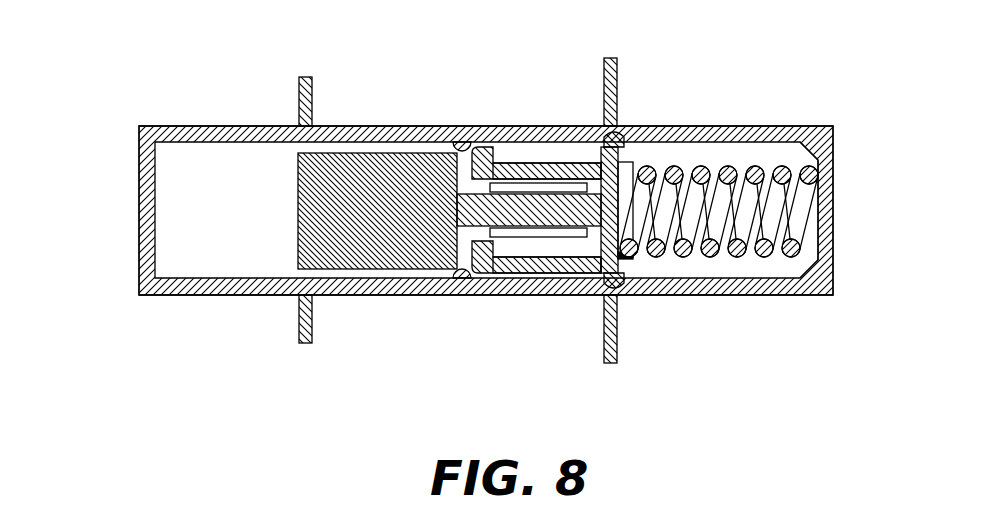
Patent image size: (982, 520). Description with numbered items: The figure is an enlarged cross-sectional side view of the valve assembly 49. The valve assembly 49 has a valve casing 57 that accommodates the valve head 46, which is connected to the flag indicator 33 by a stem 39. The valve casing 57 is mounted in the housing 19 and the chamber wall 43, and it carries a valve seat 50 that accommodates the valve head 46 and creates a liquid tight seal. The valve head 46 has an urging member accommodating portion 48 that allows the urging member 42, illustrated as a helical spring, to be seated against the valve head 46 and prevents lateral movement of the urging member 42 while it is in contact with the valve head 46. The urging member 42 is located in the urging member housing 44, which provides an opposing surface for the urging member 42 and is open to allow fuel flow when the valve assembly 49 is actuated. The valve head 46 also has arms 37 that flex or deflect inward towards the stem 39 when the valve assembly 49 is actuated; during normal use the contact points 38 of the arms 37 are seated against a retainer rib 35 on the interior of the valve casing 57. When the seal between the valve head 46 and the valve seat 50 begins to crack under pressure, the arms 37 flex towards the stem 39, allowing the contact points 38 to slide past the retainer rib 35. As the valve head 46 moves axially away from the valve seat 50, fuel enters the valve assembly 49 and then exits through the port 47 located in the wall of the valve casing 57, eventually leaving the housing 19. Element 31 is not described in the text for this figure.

The housing 19 is at (299, 103).
The housing 31 is at (146, 280).
The flag indicator 33 is at (330, 160).
The retainer rib 35 is at (462, 138).
The arms 37 is at (548, 165).
The contact points 38 is at (487, 127).
The stem 39 is at (522, 215).
The urging member 42 is at (748, 190).
The chamber wall 43 is at (602, 70).
The urging member housing 44 is at (790, 296).
The valve head 46 is at (628, 260).
The port 47 is at (537, 190).
The urging member accommodating portion 48 is at (628, 170).
The valve assembly 49 is at (118, 141).
The valve seat 50 is at (636, 140).
The valve casing 57 is at (392, 288).